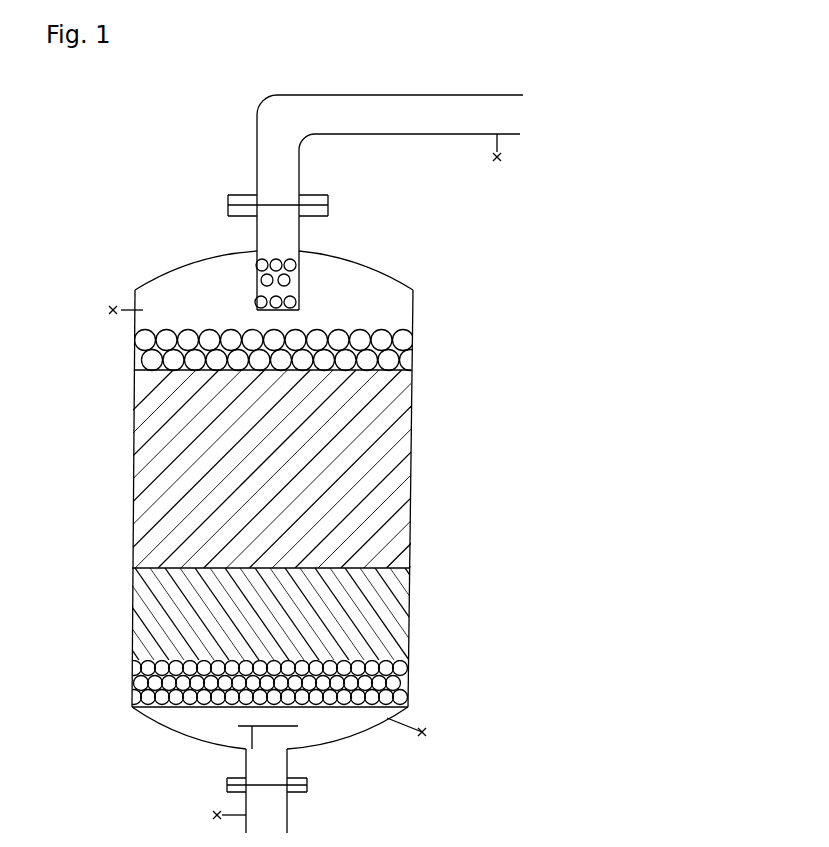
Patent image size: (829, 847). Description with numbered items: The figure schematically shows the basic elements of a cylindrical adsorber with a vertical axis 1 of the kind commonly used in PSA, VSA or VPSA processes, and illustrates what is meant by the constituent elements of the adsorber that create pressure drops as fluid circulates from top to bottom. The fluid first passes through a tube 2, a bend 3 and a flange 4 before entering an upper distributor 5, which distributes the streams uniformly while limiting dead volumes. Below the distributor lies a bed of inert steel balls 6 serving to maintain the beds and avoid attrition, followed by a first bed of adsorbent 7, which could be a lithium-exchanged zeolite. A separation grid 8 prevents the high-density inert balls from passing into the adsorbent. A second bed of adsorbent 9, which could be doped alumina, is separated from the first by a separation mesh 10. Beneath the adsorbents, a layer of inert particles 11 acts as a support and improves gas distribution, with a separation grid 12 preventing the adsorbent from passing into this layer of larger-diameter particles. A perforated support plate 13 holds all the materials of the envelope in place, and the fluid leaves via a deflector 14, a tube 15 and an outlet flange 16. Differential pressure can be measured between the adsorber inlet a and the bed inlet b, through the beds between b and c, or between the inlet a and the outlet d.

The cylindrical adsorber with a vertical axis 1 is at (413, 490).
The tube 2 is at (433, 110).
The bend 3 is at (275, 122).
The flange 4 is at (328, 208).
The upper distributor 5 is at (285, 268).
The bed of inert steel balls 6 is at (405, 338).
The first bed of adsorbent 7 is at (150, 452).
The separation grid 8 is at (134, 388).
The second bed of adsorbent 9 is at (146, 628).
The separation mesh 10 is at (132, 578).
The layer of inert particles 11 is at (398, 700).
The separation grid 12 is at (397, 665).
The perforated support plate 13 is at (182, 707).
The deflector 14 is at (240, 742).
The tube 15 is at (287, 828).
The outlet flange 16 is at (307, 785).
The inlet measurement point a is at (504, 151).
The bed inlet measurement point b is at (115, 310).
The bed outlet measurement point c is at (412, 731).
The outlet measurement point d is at (218, 815).